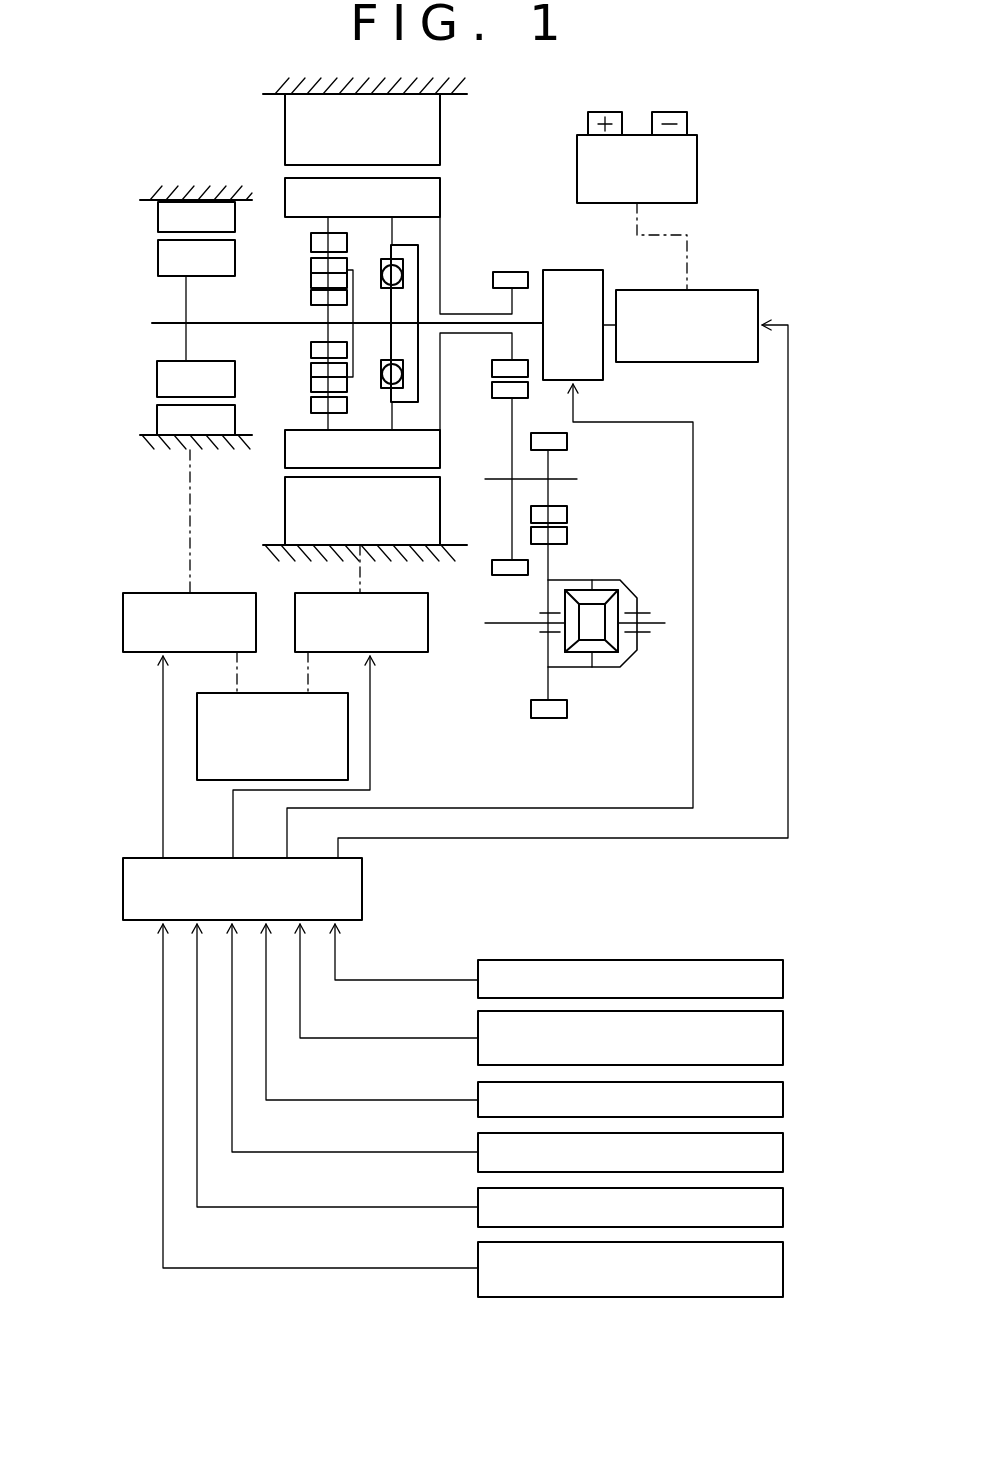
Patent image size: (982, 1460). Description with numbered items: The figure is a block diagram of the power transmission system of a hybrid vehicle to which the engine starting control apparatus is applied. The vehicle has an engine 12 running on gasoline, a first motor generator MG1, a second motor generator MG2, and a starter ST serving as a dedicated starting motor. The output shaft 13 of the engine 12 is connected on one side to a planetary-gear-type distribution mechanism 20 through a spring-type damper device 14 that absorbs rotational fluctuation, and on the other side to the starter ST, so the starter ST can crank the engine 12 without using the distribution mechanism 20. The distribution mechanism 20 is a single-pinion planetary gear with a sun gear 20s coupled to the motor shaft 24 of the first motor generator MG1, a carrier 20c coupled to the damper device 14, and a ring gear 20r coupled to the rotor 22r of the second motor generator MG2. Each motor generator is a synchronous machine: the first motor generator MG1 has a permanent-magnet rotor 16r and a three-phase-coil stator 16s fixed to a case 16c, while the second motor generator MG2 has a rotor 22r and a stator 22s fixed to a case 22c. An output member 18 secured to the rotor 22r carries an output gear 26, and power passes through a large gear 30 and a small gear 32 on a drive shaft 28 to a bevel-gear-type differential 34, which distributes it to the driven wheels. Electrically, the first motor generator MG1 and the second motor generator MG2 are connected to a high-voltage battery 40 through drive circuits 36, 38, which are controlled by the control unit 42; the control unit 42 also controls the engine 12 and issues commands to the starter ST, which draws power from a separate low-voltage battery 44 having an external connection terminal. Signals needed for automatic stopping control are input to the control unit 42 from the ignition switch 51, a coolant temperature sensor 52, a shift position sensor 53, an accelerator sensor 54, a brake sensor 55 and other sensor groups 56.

The first motor generator MG1 is at (143, 376).
The second motor generator MG2 is at (478, 144).
The engine 12 is at (595, 380).
The output shaft 13 is at (535, 322).
The damper device 14 is at (381, 265).
The rotor 16r is at (158, 257).
The stator 16s is at (160, 425).
The case 16c is at (160, 447).
The output member 18 is at (440, 395).
The distribution mechanism 20 is at (305, 266).
The sun gear 20s is at (311, 348).
The ring gear 20r is at (311, 403).
The carrier 20c is at (354, 344).
The rotor 22r is at (440, 193).
The stator 22s is at (440, 536).
The case 22c is at (273, 545).
The motor shaft 24 is at (300, 322).
The output gear 26 is at (493, 278).
The drive shaft 28 is at (567, 478).
The large gear 30 is at (505, 574).
The small gear 32 is at (567, 513).
The differential 34 is at (593, 686).
The drive circuit 36 is at (123, 620).
The drive circuit 38 is at (410, 652).
The high-voltage battery 40 is at (212, 780).
The control unit 42 is at (123, 880).
The low-voltage battery 44 is at (697, 152).
The starter ST is at (715, 290).
The ignition switch 51 is at (783, 981).
The coolant temperature sensor 52 is at (783, 1039).
The shift position sensor 53 is at (783, 1100).
The accelerator sensor 54 is at (783, 1152).
The brake sensor 55 is at (783, 1207).
The other sensor groups 56 is at (783, 1269).